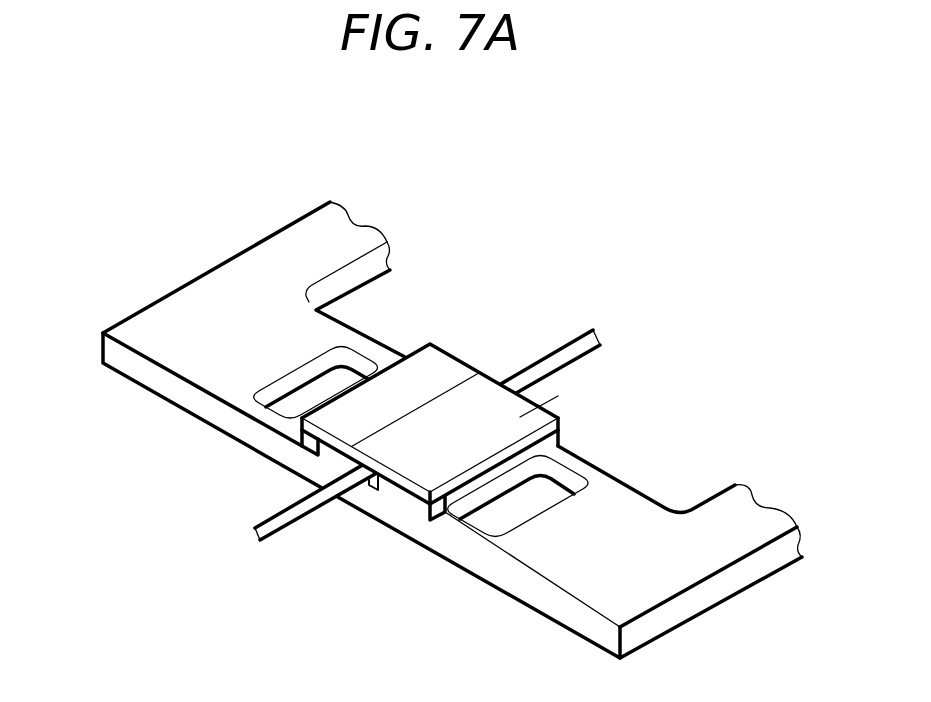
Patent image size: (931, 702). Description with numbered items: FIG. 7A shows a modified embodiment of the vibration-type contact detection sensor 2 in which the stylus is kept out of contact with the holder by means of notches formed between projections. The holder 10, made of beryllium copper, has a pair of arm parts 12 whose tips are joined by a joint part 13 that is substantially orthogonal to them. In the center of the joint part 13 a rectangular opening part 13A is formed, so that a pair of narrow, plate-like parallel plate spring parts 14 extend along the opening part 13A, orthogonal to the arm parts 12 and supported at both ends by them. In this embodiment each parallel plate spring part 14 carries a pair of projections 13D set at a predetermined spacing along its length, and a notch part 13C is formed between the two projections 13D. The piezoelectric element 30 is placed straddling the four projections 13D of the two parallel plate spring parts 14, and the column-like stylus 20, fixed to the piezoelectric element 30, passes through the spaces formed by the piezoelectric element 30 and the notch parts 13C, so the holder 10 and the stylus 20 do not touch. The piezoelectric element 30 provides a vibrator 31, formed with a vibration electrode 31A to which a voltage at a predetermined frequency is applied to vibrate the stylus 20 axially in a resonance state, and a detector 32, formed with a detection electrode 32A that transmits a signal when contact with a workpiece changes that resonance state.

The semiconductor device 2 is at (407, 206).
The holder 10 is at (240, 244).
The arm parts 12 is at (312, 237).
The joint part 13 is at (212, 360).
The opening part 13A is at (545, 512).
The notch parts 13C is at (372, 490).
The projections 13D is at (555, 446).
The parallel plate spring parts 14 is at (380, 350).
The stylus 20 is at (273, 535).
The piezoelectric element 30 is at (499, 361).
The vibrator 31 is at (420, 356).
The vibration electrode 31A is at (452, 378).
The detector 32 is at (550, 412).
The detection electrode 32A is at (540, 392).